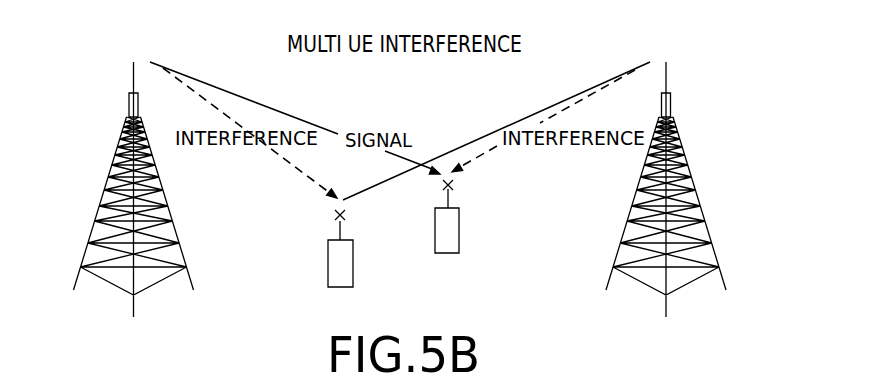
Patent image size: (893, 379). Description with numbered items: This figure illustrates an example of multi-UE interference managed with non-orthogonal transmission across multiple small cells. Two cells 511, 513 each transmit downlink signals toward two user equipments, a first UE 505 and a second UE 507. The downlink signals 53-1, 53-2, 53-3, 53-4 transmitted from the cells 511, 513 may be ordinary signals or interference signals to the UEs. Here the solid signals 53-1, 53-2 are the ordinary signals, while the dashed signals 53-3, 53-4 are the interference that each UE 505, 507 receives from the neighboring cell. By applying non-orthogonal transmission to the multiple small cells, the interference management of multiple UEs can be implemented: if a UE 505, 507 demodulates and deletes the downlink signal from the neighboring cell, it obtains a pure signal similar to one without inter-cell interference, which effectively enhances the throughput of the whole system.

The cell 511 is at (128, 107).
The cell 513 is at (672, 104).
The UE 505 is at (354, 262).
The UE 507 is at (460, 230).
The DL signal 53-1 is at (262, 105).
The DL signal 53-2 is at (552, 105).
The DL signal 53-3 is at (298, 170).
The DL signal 53-4 is at (490, 152).